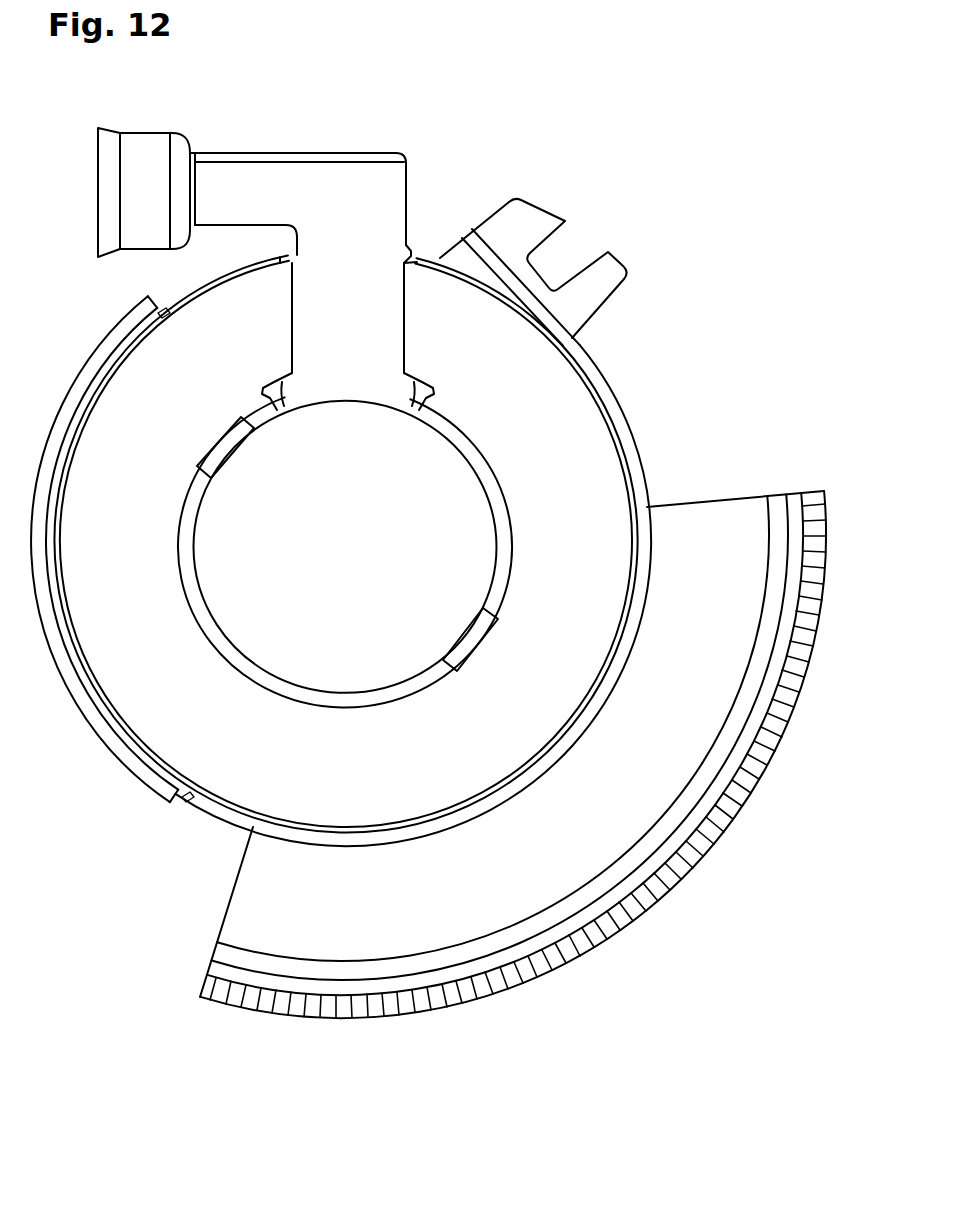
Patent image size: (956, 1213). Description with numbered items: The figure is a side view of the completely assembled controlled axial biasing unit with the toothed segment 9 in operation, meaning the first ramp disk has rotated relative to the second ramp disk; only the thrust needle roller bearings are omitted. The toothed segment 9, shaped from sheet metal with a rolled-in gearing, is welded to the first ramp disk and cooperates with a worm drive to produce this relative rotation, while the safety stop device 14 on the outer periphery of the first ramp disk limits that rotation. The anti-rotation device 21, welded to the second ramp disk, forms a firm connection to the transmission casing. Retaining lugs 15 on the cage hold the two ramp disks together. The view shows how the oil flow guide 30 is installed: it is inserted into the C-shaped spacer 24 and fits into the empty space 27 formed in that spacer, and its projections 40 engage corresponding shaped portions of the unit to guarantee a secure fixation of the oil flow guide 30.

The toothed segment 9 is at (703, 530).
The safety stop device 14 is at (140, 305).
The retaining lugs 15 is at (242, 437).
The anti-rotation device 21 is at (520, 215).
The spacer 24 is at (572, 440).
The empty space 27 is at (408, 288).
The oil flow guide 30 is at (342, 195).
The projections 40 is at (278, 270).